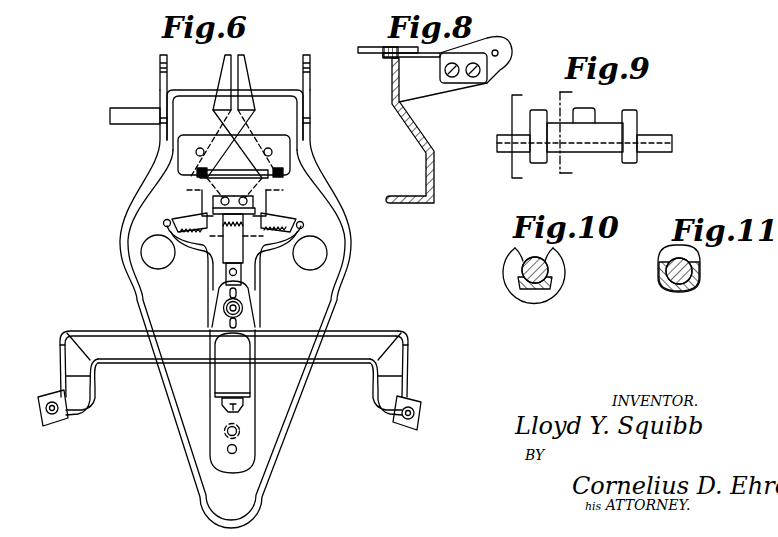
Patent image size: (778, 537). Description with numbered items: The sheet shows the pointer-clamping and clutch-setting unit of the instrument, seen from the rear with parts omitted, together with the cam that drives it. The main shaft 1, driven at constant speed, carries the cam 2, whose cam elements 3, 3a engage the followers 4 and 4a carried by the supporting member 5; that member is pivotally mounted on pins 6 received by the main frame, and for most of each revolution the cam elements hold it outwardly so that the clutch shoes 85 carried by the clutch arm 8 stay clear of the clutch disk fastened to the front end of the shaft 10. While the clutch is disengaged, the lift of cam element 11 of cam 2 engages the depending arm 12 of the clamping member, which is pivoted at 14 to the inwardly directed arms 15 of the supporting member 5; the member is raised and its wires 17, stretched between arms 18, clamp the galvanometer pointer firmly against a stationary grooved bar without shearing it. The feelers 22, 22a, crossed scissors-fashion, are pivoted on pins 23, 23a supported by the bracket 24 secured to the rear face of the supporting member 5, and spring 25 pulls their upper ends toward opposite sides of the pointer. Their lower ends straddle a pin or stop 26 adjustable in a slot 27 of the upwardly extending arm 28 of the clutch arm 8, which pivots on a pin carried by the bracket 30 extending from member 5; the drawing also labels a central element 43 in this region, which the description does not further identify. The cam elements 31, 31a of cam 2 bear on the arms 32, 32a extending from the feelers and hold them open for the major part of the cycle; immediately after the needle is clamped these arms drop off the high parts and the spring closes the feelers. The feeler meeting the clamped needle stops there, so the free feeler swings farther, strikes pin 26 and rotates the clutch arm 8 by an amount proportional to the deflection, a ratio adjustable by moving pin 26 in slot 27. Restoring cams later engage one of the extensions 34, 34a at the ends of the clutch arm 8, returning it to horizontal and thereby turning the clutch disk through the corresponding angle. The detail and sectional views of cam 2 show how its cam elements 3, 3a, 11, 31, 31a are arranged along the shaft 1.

In FIG. 10, the main shaft 1 is at (548, 268).
In FIG. 9, the cam 2 is at (613, 134).
In FIG. 9, the cam element 3 is at (504, 148).
In FIG. 10, the cam element 3 is at (549, 284).
In FIG. 9, the cam element 3a is at (668, 149).
In FIG. 6, the follower 4 is at (159, 262).
In FIG. 6, the follower 4a is at (309, 263).
In FIG. 6, the supporting member 5 is at (160, 172).
In FIG. 6, the pin 6 is at (112, 115).
In FIG. 6, the clutch arm 8 is at (358, 332).
In FIG. 9, the shaft 10 is at (528, 140).
In FIG. 9, the cam element 11 is at (588, 112).
In FIG. 11, the cam element 11 is at (672, 251).
In FIG. 8, the depending arm 12 is at (428, 188).
In FIG. 6, the pivot 14 is at (160, 62).
In FIG. 6, the inwardly directed arm 15 is at (160, 80).
In FIG. 8, the wire 17 is at (391, 58).
In FIG. 8, the arm 18 is at (366, 47).
In FIG. 6, the feeler 22 is at (224, 65).
In FIG. 6, the feeler 22a is at (245, 65).
In FIG. 6, the pin 23 is at (250, 200).
In FIG. 6, the pin 23a is at (217, 200).
In FIG. 6, the bracket 24 is at (274, 166).
In FIG. 6, the spring 25 is at (303, 228).
In FIG. 6, the pin 26 is at (246, 308).
In FIG. 6, the slot 27 is at (228, 295).
In FIG. 6, the upwardly extending arm 28 is at (225, 320).
In FIG. 6, the bracket 30 is at (250, 382).
In FIG. 9, the cam element 31 is at (540, 160).
In FIG. 10, the cam element 31 is at (513, 260).
In FIG. 9, the cam element 31a is at (633, 164).
In FIG. 6, the arm 32 is at (270, 226).
In FIG. 6, the arm 32a is at (182, 221).
In FIG. 6, the extension 34 is at (420, 400).
In FIG. 6, the extension 34a is at (46, 396).
In FIG. 6, the slide bar 43 is at (243, 270).
In FIG. 6, the clutch shoe 85 is at (72, 340).